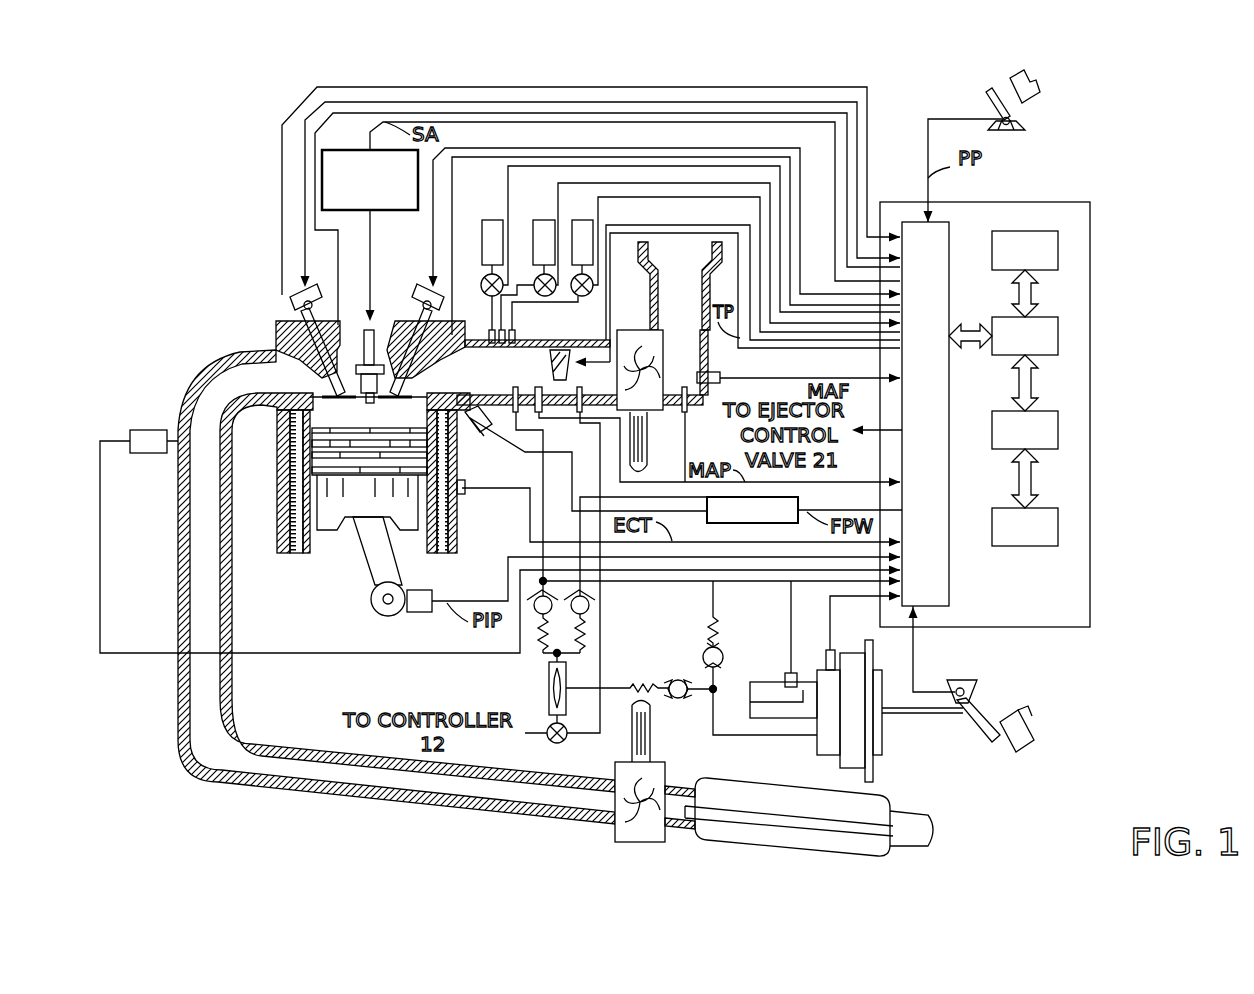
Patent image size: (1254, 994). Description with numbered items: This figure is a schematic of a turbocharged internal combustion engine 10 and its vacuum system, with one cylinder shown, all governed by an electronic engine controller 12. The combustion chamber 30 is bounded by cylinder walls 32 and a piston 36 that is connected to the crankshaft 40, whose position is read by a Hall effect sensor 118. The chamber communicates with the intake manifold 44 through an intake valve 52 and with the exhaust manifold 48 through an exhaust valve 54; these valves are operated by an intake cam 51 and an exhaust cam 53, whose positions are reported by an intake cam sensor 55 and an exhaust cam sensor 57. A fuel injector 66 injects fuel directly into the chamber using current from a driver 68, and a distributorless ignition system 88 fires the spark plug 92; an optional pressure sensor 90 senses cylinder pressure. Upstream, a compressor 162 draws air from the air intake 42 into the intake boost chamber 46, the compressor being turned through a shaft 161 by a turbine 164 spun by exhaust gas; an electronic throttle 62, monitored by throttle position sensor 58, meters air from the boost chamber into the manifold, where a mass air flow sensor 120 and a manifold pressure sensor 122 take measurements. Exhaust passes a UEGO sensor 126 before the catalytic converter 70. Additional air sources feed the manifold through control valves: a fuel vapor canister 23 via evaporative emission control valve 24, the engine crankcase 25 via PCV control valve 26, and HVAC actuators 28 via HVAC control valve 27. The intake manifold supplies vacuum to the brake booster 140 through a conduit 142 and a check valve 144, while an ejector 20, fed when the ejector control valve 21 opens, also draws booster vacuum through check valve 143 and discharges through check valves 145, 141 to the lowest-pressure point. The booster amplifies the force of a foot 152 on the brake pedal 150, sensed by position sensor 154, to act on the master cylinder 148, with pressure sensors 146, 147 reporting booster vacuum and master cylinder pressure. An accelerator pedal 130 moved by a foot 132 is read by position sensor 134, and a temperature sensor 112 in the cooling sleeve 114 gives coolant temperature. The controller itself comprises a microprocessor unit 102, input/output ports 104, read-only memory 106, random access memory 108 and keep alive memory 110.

The internal combustion engine 10 is at (213, 276).
The electronic engine controller 12 is at (1082, 203).
The ejector 20 is at (549, 668).
The ejector control valve 21 is at (565, 742).
The fuel vapor canister 23 is at (536, 220).
The evaporative emission control valve 24 is at (538, 281).
The engine crankcase 25 is at (485, 220).
The PCV control valve 26 is at (483, 281).
The HVAC control valve 27 is at (590, 294).
The HVAC actuators 28 is at (585, 220).
The combustion chamber 30 is at (283, 508).
The cylinder walls 32 is at (315, 545).
The piston 36 is at (352, 505).
The crankshaft 40 is at (380, 617).
The air intake 42 is at (691, 298).
The intake manifold 44 is at (503, 380).
The intake boost chamber 46 is at (608, 394).
The exhaust manifold 48 is at (260, 388).
The intake cam 51 is at (422, 290).
The intake valve 52 is at (405, 387).
The exhaust cam 53 is at (312, 296).
The exhaust valve 54 is at (290, 348).
The intake cam sensor 55 is at (445, 308).
The exhaust cam sensor 57 is at (293, 298).
The throttle position sensor 58 is at (568, 335).
The electronic throttle 62 is at (545, 342).
The fuel injector 66 is at (480, 437).
The driver 68 is at (712, 523).
The catalytic converter 70 is at (700, 846).
The distributorless ignition system 88 is at (337, 150).
The pressure sensor 90 is at (345, 320).
The spark plug 92 is at (378, 322).
The microprocessor unit 102 is at (1058, 337).
The input/output ports 104 is at (955, 225).
The read-only memory 106 is at (1058, 252).
The random access memory 108 is at (1058, 430).
The keep alive memory 110 is at (1058, 525).
The temperature sensor 112 is at (462, 478).
The cooling sleeve 114 is at (460, 518).
The Hall effect sensor 118 is at (413, 613).
The air mass sensor 120 is at (720, 374).
The pressure sensor 122 is at (537, 386).
The UEGO sensor 126 is at (130, 432).
The accelerator pedal 130 is at (988, 99).
The foot 132 is at (1035, 86).
The position sensor 134 is at (1020, 122).
The brake booster 140 is at (817, 757).
The check valve 141 is at (590, 606).
The conduit 142 is at (716, 584).
The check valve 143 is at (680, 682).
The check valve 144 is at (723, 658).
The check valve 145 is at (533, 612).
The pressure sensor 146 is at (834, 650).
The pressure sensor 147 is at (797, 673).
The master cylinder 148 is at (750, 682).
The brake pedal 150 is at (985, 738).
The foot 152 is at (1017, 708).
The position sensor 154 is at (955, 688).
The shaft 161 is at (650, 455).
The compressor 162 is at (645, 326).
The turbine 164 is at (664, 762).